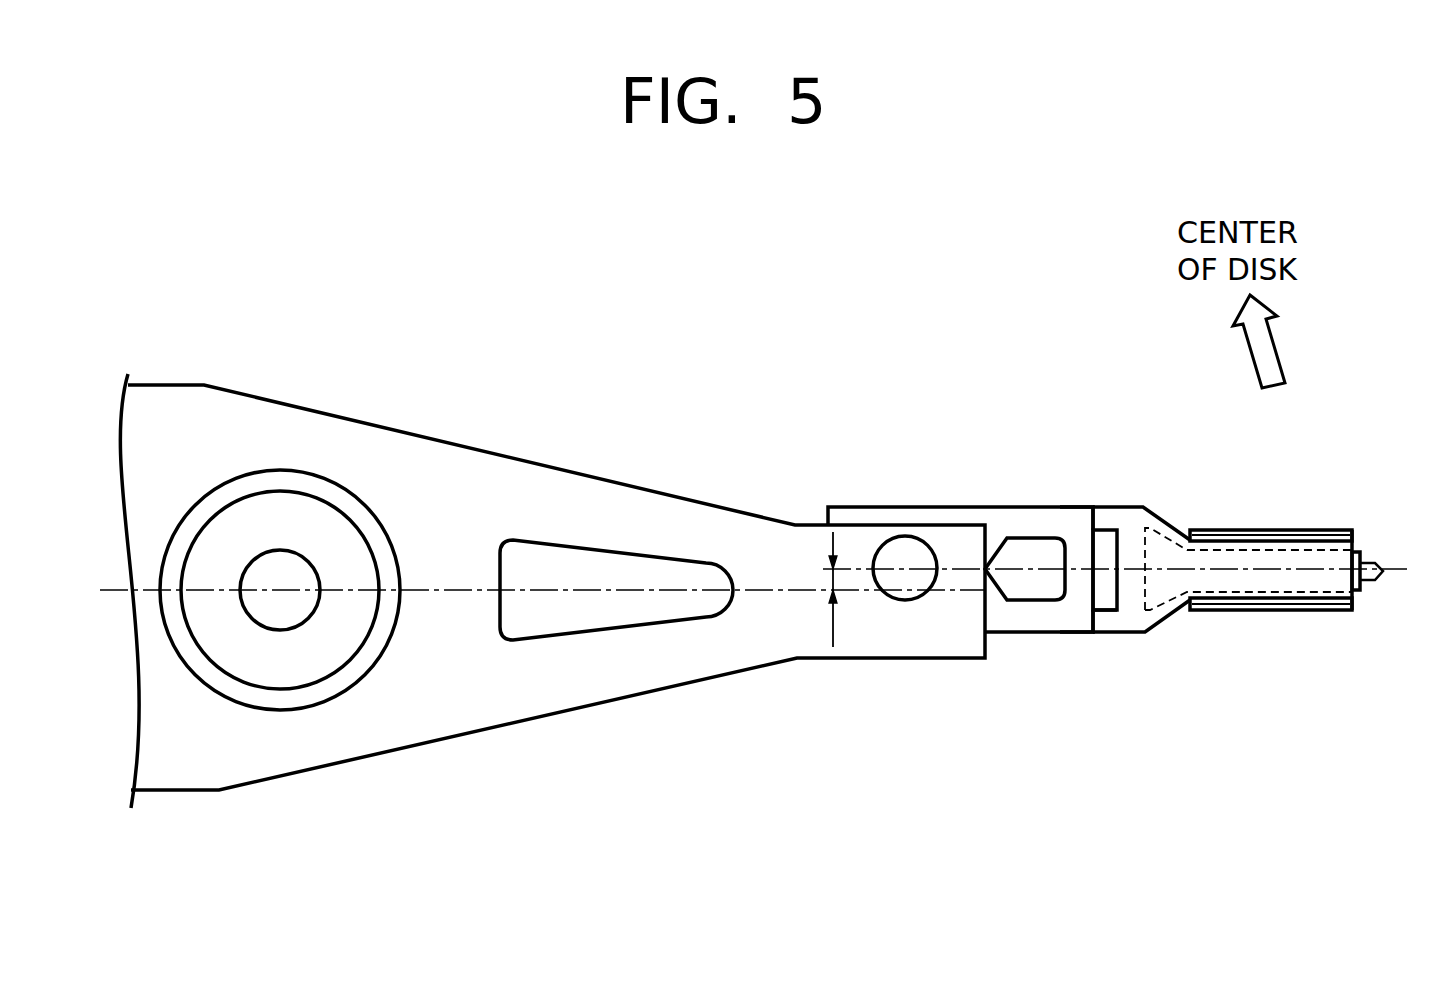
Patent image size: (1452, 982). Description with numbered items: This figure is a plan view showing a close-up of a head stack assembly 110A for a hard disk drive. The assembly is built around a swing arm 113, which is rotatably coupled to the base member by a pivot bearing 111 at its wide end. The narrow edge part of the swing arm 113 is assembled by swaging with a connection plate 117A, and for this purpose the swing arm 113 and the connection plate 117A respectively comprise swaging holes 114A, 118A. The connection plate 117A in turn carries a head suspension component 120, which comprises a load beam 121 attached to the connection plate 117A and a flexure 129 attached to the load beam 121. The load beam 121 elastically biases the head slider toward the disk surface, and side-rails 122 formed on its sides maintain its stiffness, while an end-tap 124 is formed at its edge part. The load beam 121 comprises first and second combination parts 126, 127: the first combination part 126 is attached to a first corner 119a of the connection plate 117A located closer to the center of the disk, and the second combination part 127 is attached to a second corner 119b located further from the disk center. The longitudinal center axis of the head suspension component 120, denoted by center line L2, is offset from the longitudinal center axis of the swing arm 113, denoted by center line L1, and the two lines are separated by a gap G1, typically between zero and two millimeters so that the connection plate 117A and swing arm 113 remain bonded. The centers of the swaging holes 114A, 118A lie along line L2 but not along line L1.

The head stack assembly 110A is at (221, 346).
The pivot bearing 111 is at (285, 558).
The swing arm 113 is at (653, 510).
The swaging hole 114A is at (892, 518).
The swaging hole 118A is at (903, 557).
The connection plate 117A is at (1030, 517).
The first corner 119a is at (1092, 515).
The second corner 119b is at (1092, 626).
The first combination part 126 is at (1107, 508).
The second combination part 127 is at (1103, 622).
The head suspension component 120 is at (1265, 604).
The load beam 121 is at (1138, 528).
The side-rails 122 is at (1282, 530).
The end-tap 124 is at (1375, 563).
The flexure 129 is at (1353, 590).
The center line L1 is at (758, 590).
The center line L2 is at (1310, 573).
The gap G1 is at (813, 589).